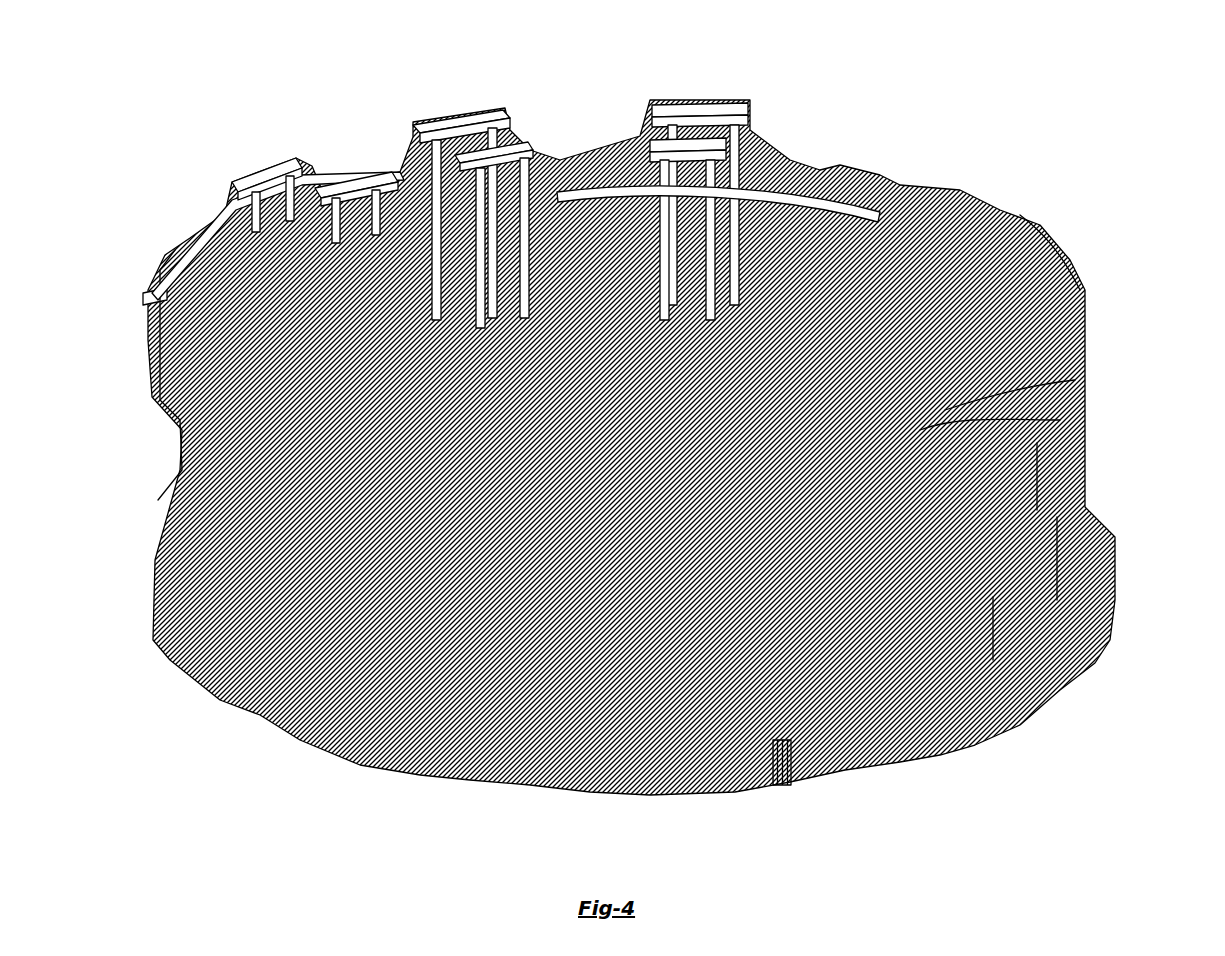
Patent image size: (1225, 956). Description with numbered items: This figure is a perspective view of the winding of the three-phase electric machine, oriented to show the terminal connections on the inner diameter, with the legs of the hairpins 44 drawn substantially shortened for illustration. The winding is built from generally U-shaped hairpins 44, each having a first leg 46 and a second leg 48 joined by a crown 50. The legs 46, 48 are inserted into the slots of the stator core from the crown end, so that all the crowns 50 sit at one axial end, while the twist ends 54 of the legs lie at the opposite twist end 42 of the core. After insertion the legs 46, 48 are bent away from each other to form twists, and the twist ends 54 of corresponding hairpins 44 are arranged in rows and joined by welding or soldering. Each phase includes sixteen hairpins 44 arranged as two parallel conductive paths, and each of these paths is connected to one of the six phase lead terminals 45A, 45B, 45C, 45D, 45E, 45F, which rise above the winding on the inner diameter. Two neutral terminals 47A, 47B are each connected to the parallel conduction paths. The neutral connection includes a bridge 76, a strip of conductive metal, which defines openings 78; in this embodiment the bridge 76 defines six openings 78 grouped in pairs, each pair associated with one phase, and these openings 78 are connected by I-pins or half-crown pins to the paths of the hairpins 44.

The twist end 42 is at (385, 778).
The hairpin 44 is at (1057, 517).
The first leg 46 is at (1037, 443).
The second leg 48 is at (920, 430).
The crown 50 is at (945, 410).
The twist end of leg 54 is at (783, 767).
The bridge 76 is at (170, 248).
The opening 78 is at (148, 290).
The phase lead terminal 45A is at (252, 172).
The phase lead terminal 45B is at (462, 116).
The phase lead terminal 45C is at (694, 100).
The phase lead terminal 45D is at (345, 186).
The phase lead terminal 45E is at (512, 148).
The phase lead terminal 45F is at (695, 140).
The neutral terminal 47A is at (226, 212).
The neutral terminal 47B is at (778, 185).